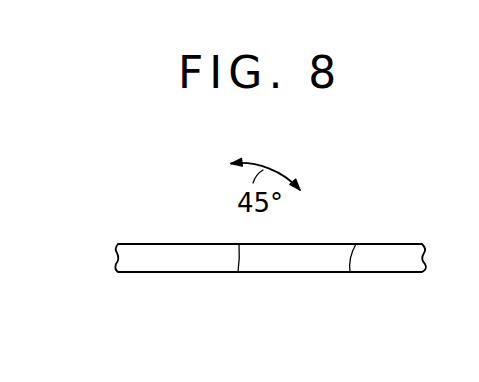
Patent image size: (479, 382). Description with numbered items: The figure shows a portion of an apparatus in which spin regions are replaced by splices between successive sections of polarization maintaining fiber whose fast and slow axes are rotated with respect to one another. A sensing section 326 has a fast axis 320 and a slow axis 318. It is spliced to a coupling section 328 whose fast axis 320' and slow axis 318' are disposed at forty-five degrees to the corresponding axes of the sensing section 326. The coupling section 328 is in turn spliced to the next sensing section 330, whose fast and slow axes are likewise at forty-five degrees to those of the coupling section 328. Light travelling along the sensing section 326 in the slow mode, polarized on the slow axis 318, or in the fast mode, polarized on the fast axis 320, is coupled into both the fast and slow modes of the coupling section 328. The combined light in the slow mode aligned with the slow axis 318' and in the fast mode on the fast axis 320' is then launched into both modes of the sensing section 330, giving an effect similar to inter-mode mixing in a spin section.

The slow axis 318 is at (322, 176).
The slow axis 318' is at (306, 190).
The fast axis 320 is at (227, 289).
The fast axis 320' is at (204, 201).
The sensing section 326 is at (215, 272).
The coupling section 328 is at (308, 252).
The sensing section 330 is at (392, 270).